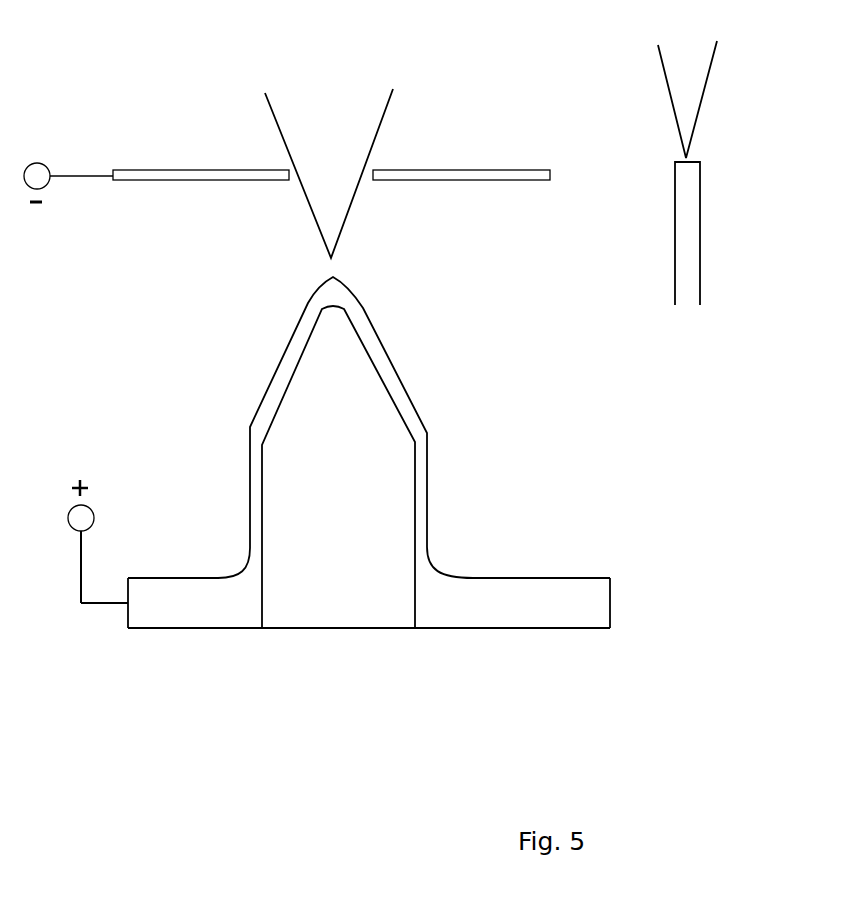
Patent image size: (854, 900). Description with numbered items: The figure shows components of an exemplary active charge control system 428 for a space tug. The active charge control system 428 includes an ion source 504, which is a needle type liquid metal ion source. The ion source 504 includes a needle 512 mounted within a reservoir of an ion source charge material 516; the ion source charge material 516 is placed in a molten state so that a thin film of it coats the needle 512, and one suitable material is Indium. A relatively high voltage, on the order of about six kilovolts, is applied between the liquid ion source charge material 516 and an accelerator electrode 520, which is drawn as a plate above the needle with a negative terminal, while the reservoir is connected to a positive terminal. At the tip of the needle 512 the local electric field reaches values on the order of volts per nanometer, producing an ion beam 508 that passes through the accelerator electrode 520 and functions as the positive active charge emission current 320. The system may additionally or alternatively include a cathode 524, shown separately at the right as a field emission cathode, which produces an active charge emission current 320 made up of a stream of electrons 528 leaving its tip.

The active charge emission current 320 is at (372, 155).
The active charge control system 428 is at (511, 650).
The ion source 504 is at (304, 630).
The ion beam 508 is at (382, 127).
The needle 512 is at (367, 629).
The ion source charge material 516 is at (497, 575).
The accelerator electrode 520 is at (173, 168).
The cathode 524 is at (702, 248).
The stream of electrons 528 is at (677, 121).